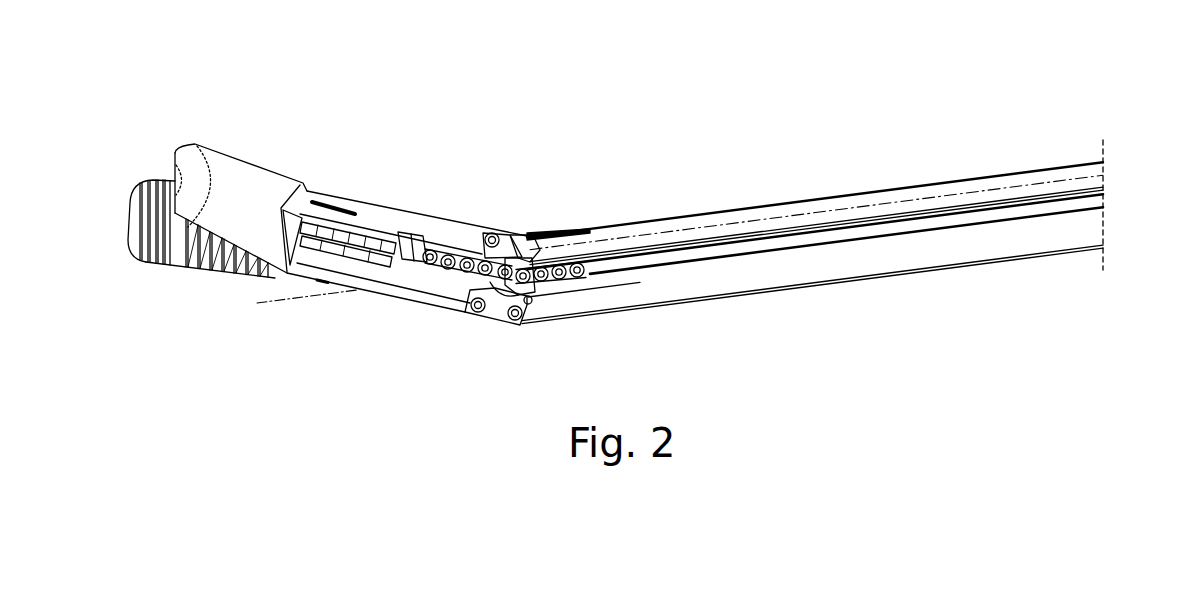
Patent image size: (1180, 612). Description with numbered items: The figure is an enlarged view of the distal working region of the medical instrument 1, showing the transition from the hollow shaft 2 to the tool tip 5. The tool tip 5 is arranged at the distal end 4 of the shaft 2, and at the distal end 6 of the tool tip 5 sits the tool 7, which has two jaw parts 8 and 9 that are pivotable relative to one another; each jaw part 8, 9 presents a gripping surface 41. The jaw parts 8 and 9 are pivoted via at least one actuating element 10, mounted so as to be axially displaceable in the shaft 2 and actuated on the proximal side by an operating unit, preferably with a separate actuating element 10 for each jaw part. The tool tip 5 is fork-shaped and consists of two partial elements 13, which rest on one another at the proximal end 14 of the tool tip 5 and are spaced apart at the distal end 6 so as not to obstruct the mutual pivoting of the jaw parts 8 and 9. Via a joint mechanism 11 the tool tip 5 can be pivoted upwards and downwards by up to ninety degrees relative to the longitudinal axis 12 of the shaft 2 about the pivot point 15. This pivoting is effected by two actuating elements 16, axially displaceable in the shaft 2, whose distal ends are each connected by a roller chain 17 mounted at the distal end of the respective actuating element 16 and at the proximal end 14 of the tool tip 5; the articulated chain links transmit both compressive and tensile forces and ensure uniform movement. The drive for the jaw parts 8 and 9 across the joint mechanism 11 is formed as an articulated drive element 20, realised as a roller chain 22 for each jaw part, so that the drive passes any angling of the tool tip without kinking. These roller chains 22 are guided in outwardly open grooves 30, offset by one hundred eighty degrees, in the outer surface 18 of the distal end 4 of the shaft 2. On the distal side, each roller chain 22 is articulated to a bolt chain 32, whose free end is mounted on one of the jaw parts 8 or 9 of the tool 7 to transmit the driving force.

The medical instrument 1 is at (495, 90).
The hollow shaft 2 is at (860, 190).
The distal end of the shaft 4 is at (530, 325).
The tool tip 5 is at (417, 178).
The distal end of the tool tip 6 is at (288, 280).
The tool 7 is at (190, 120).
The jaw part 8 is at (235, 187).
The jaw part 9 is at (145, 265).
The actuating element 10 is at (875, 252).
The joint mechanism 11 is at (533, 192).
The longitudinal axis of the shaft 12 is at (312, 298).
The partial element 13 is at (345, 205).
The proximal end of the tool tip 14 is at (468, 318).
The pivot point 15 is at (540, 235).
The actuating element 16 is at (716, 221).
The roller chain 17 is at (490, 233).
The outer surface of the distal end of the shaft 18 is at (655, 300).
The articulated drive element 20 is at (463, 238).
The roller chain 22 is at (587, 292).
The groove 30 is at (720, 260).
The bolt chain 32 is at (322, 215).
The gripping surface 41 is at (135, 215).